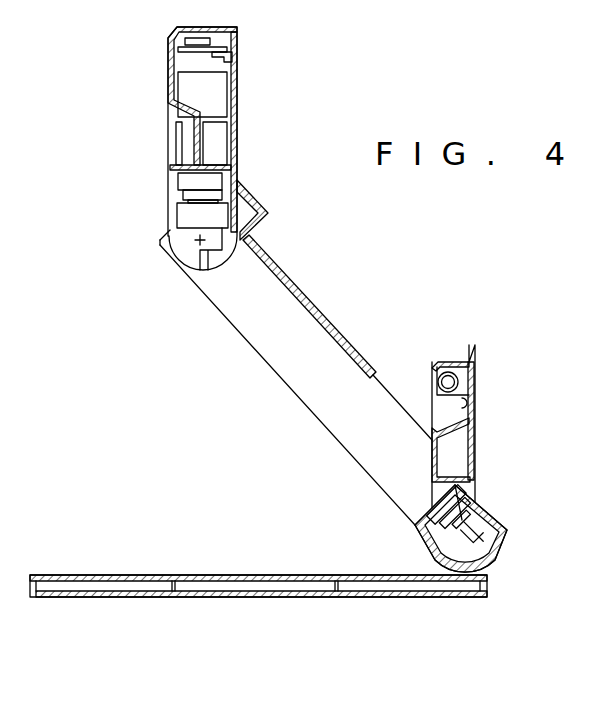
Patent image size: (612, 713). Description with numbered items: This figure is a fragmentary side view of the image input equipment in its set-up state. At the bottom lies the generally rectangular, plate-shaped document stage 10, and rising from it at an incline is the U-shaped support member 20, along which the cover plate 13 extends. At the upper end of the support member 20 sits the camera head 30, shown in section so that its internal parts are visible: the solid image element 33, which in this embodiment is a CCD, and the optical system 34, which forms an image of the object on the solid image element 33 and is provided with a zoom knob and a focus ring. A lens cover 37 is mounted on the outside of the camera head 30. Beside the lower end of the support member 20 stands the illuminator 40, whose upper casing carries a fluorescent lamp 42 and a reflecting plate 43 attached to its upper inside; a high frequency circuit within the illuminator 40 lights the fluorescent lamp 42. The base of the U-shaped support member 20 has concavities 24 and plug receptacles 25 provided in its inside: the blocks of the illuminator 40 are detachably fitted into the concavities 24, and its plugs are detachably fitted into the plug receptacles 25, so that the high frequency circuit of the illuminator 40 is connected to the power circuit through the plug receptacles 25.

The document stage 10 is at (312, 593).
The cover plate 13 is at (287, 280).
The U-shaped support member 20 is at (383, 407).
The concavities 24 is at (462, 513).
The plug receptacles 25 is at (468, 517).
The camera head 30 is at (250, 75).
The solid image element 33 is at (210, 43).
The optical system 34 is at (208, 190).
The lens cover 37 is at (257, 203).
The illuminator 40 is at (487, 433).
The fluorescent lamp 42 is at (452, 360).
The reflecting plate 43 is at (470, 392).